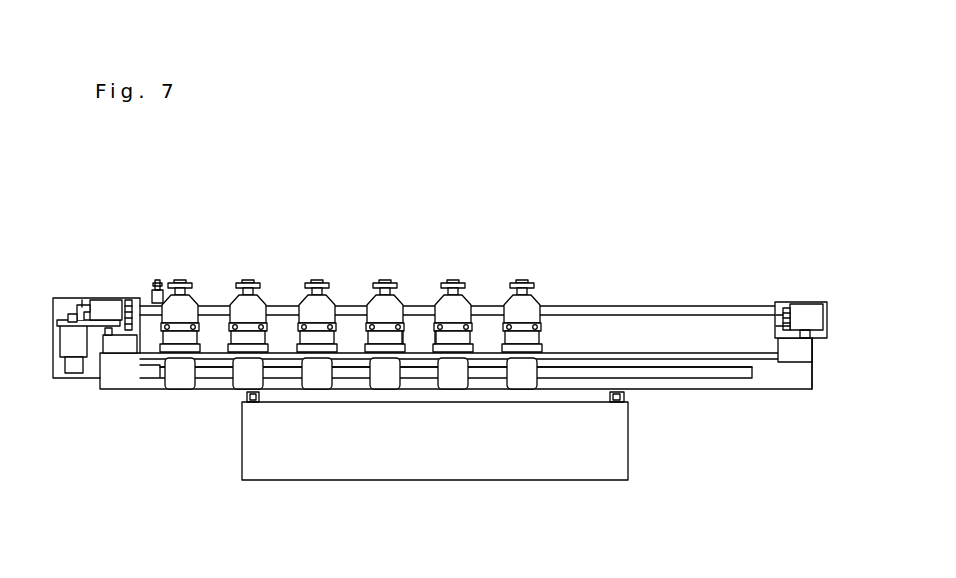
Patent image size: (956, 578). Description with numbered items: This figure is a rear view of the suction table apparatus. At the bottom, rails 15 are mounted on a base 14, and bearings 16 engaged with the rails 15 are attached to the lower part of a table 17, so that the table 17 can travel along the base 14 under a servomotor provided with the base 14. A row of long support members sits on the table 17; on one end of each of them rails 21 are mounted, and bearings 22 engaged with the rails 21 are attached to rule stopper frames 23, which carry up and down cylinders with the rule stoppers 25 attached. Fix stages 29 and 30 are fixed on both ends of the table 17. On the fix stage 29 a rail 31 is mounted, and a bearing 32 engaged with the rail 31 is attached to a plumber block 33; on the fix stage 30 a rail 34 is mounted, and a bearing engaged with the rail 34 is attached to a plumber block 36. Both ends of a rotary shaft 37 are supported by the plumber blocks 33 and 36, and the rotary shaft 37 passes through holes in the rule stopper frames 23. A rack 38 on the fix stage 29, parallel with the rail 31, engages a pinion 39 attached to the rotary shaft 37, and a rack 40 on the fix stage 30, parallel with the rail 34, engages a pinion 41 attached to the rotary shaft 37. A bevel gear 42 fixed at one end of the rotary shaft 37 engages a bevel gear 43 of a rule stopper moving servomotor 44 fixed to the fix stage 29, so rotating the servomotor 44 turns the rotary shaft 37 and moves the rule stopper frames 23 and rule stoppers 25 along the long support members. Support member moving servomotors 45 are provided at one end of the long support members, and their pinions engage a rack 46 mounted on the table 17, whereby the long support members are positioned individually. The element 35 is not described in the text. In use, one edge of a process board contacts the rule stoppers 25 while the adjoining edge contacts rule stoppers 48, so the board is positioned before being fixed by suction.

The base 14 is at (497, 472).
The rails 15 is at (252, 397).
The bearings 16 is at (245, 394).
The table 17 is at (763, 516).
The rails 21 is at (442, 345).
The bearings 22 is at (367, 320).
The rule stopper frames 23 is at (512, 312).
The rule stoppers 25 is at (317, 283).
The fix stage 29 is at (117, 355).
The fix stage 30 is at (795, 358).
The rail 31 is at (103, 356).
The bearing 32 is at (112, 307).
The plumber block 33 is at (100, 307).
The rail 34 is at (815, 345).
The stop 35 is at (815, 335).
The plumber block 36 is at (806, 310).
The rotary shaft 37 is at (622, 306).
The rack 38 is at (125, 341).
The pinion 39 is at (128, 305).
The rack 40 is at (784, 331).
The pinion 41 is at (785, 312).
The bevel gear 42 is at (82, 307).
The bevel gear 43 is at (70, 318).
The rule stopper moving servomotor 44 is at (73, 341).
The support member moving servomotors 45 is at (520, 378).
The rack 46 is at (730, 380).
The rule stoppers 48 is at (160, 282).